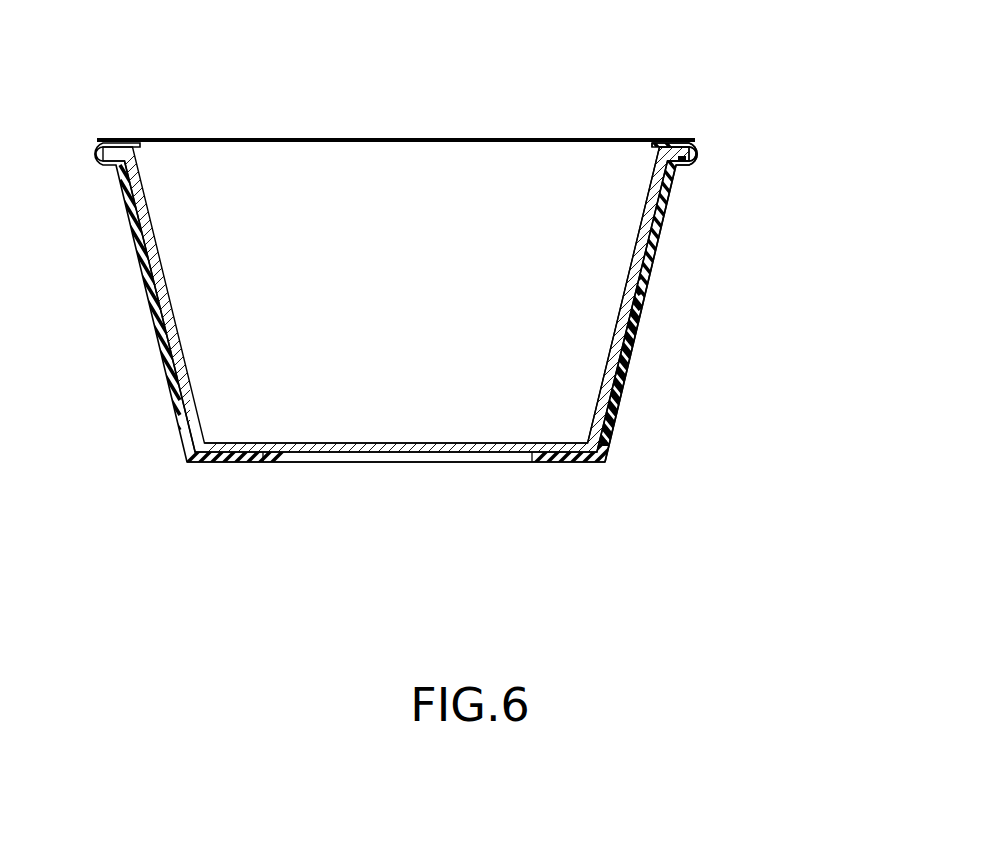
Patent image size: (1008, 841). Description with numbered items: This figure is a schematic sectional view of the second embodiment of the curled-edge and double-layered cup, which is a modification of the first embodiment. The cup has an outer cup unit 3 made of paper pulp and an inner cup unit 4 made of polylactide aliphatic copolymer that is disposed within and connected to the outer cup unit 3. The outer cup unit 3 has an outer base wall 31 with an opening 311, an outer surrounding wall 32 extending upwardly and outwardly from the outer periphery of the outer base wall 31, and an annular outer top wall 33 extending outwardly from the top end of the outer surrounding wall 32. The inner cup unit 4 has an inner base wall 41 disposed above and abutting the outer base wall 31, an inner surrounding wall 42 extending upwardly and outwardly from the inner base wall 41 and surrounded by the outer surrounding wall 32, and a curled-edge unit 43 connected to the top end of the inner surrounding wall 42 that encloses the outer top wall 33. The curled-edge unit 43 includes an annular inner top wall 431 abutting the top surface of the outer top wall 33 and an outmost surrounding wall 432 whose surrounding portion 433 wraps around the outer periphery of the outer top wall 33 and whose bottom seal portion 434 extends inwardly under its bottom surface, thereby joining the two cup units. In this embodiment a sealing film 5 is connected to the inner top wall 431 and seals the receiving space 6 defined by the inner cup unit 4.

The outer cup unit 3 is at (433, 313).
The outer base wall 31 is at (565, 462).
The opening 311 is at (408, 462).
The outer surrounding wall 32 is at (628, 363).
The annular outer top wall 33 is at (693, 163).
The inner cup unit 4 is at (463, 299).
The inner base wall 41 is at (313, 453).
The inner surrounding wall 42 is at (632, 250).
The curled-edge unit 43 is at (665, 143).
The annular inner top wall 431 is at (680, 141).
The outmost surrounding wall 432 is at (706, 152).
The surrounding portion 433 is at (702, 143).
The bottom seal portion 434 is at (686, 167).
The sealing film 5 is at (368, 134).
The receiving space 6 is at (305, 198).